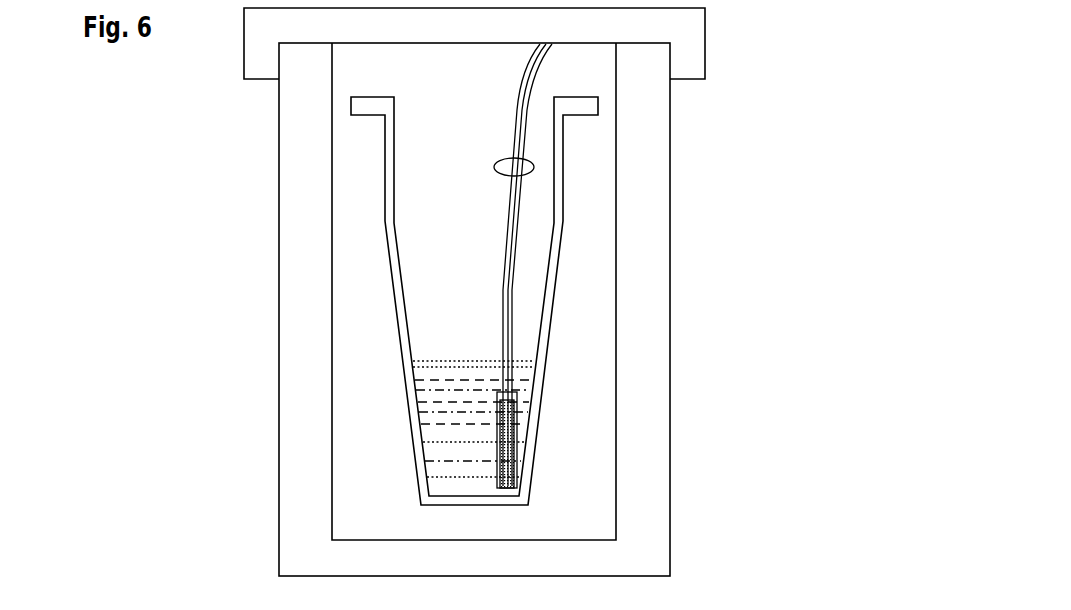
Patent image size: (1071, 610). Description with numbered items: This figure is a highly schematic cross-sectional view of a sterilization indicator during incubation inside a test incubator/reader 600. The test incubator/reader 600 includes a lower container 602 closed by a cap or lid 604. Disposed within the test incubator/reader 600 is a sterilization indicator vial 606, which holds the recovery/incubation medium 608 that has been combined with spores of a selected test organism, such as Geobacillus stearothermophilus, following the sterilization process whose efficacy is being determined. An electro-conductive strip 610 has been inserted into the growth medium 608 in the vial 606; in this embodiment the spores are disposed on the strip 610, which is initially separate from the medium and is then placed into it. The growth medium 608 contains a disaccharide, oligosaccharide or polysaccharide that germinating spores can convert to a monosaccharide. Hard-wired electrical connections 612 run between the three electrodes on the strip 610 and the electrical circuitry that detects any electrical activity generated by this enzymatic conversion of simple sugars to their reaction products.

The test incubator/reader 600 is at (208, 270).
The lower container 602 is at (652, 203).
The cap or lid 604 is at (687, 35).
The sterilization indicator vial 606 is at (550, 276).
The recovery/incubation medium 608 is at (442, 447).
The electro-conductive strip 610 is at (502, 408).
The hard-wired electrical connections 612 is at (534, 167).